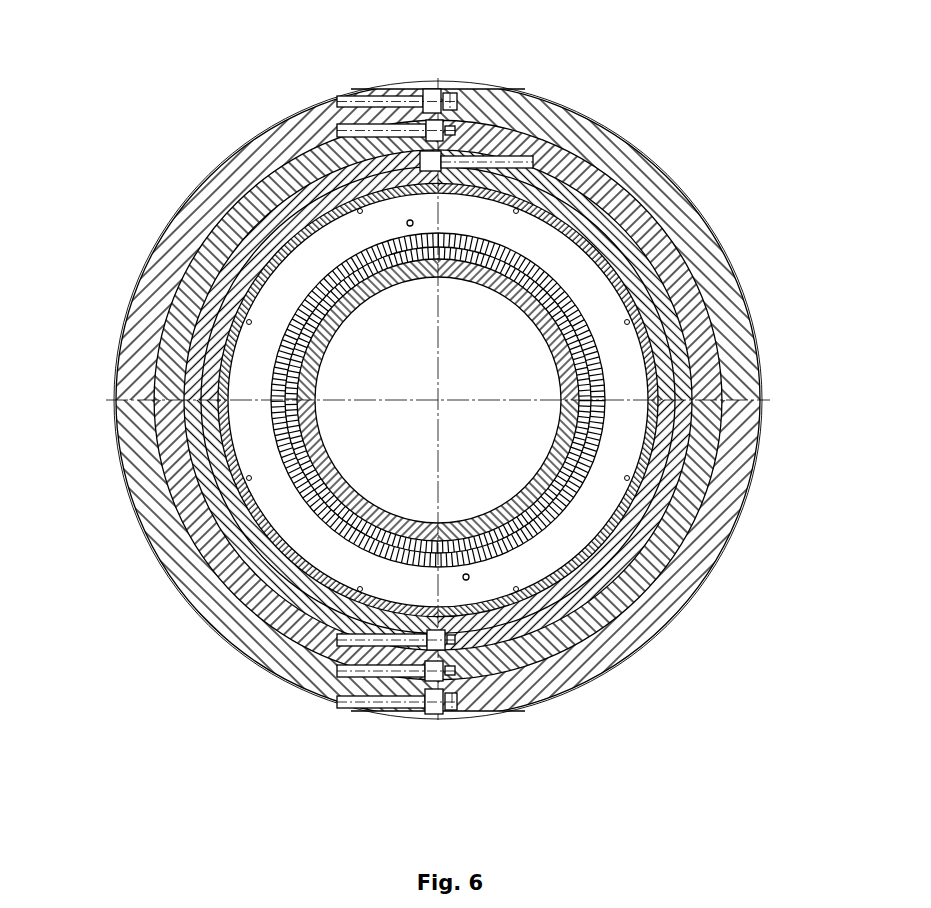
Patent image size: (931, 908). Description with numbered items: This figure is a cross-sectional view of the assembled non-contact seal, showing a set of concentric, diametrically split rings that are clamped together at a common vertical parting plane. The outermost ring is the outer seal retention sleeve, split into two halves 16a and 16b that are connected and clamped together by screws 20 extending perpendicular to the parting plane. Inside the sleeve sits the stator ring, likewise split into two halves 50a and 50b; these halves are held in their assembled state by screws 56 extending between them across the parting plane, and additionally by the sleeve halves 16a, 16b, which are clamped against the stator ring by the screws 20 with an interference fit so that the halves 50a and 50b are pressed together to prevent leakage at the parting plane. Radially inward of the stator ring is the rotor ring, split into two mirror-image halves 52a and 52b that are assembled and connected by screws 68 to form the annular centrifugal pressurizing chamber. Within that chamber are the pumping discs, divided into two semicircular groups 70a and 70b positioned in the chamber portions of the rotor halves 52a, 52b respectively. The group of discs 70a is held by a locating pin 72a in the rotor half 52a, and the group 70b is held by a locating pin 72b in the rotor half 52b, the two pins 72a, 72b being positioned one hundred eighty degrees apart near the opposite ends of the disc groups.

The outer retention sleeve half 16a is at (232, 163).
The outer retention sleeve half 16b is at (641, 166).
The stator ring half 50a is at (200, 250).
The stator ring half 50b is at (668, 245).
The rotor ring half 52a is at (222, 372).
The rotor ring half 52b is at (654, 372).
The group of pumping discs 70a is at (245, 446).
The group of pumping discs 70b is at (618, 452).
The locating pin 72a is at (408, 220).
The locating pin 72b is at (468, 580).
The screws 20 is at (423, 102).
The screws 56 is at (444, 124).
The screws 68 is at (461, 151).